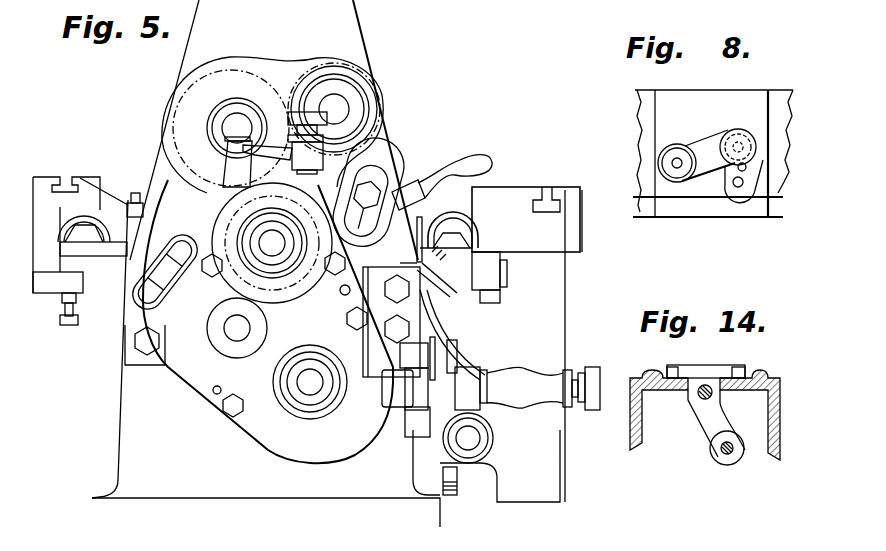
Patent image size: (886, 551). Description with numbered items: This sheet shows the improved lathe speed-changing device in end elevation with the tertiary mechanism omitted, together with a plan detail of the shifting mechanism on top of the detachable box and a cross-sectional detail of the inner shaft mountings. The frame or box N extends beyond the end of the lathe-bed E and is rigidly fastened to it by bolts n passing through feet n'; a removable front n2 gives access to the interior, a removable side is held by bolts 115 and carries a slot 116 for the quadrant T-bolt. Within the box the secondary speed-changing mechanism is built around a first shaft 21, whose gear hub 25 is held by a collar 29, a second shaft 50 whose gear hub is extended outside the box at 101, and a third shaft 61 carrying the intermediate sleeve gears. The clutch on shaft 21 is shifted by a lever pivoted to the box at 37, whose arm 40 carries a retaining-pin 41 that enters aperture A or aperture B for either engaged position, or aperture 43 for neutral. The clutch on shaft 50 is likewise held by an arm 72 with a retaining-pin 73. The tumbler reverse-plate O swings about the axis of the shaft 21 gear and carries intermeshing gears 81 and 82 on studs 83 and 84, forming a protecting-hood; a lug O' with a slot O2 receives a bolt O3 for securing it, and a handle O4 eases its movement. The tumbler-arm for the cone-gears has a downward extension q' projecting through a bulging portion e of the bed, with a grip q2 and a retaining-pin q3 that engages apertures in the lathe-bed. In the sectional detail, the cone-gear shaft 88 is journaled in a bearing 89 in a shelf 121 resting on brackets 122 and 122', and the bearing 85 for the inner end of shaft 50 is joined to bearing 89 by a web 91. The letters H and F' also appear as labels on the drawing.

In FIG. 5, the frame or box N is at (188, 398).
In FIG. 8, the frame or box N is at (670, 195).
In FIG. 5, the lathe-bed or shears E is at (128, 425).
In FIG. 14, the lathe-bed or shears E is at (637, 435).
In FIG. 5, the gear 82 is at (198, 100).
In FIG. 5, the stud 84 is at (237, 127).
In FIG. 5, the gear 81 is at (355, 83).
In FIG. 5, the stud 83 is at (364, 109).
In FIG. 5, the tumbler reverse-plate O is at (405, 92).
In FIG. 5, the arm 40 is at (275, 150).
In FIG. 8, the arm 40 is at (700, 139).
In FIG. 5, the retaining-pin 41 is at (303, 112).
In FIG. 8, the retaining-pin 41 is at (757, 142).
In FIG. 5, the lug O' is at (369, 192).
In FIG. 5, the slot O2 is at (442, 182).
In FIG. 5, the bolt O3 is at (405, 162).
In FIG. 5, the handle O4 is at (462, 163).
In FIG. 5, the hand lever H is at (412, 147).
In FIG. 5, the collar 29 is at (278, 216).
In FIG. 5, the elongated hub 25 is at (290, 228).
In FIG. 5, the shaft 21 is at (284, 243).
In FIG. 5, the third shaft 61 is at (235, 335).
In FIG. 5, the second shaft 50 is at (330, 404).
In FIG. 14, the second shaft 50 is at (718, 458).
In FIG. 5, the extended hub of gear 52 101 is at (309, 400).
In FIG. 5, the bolts 115 is at (346, 318).
In FIG. 5, the slot 116 is at (175, 250).
In FIG. 5, the bolts n is at (267, 356).
In FIG. 5, the feet n' is at (105, 346).
In FIG. 5, the removable front n2 is at (391, 322).
In FIG. 5, the block F' is at (527, 231).
In FIG. 5, the bulging portion of the bed e is at (450, 293).
In FIG. 5, the downward extension q' is at (455, 335).
In FIG. 5, the arm 72 is at (415, 385).
In FIG. 5, the retaining-pin 73 is at (450, 358).
In FIG. 5, the grip q2 is at (525, 380).
In FIG. 5, the retaining-pin q3 is at (597, 366).
In FIG. 8, the aperture B is at (745, 208).
In FIG. 8, the pivot 37 is at (680, 168).
In FIG. 8, the aperture A is at (748, 118).
In FIG. 8, the aperture 43 is at (760, 181).
In FIG. 14, the bracket 122 is at (652, 358).
In FIG. 14, the bracket 122' is at (770, 359).
In FIG. 14, the shelf 121 is at (703, 369).
In FIG. 14, the shaft 88 is at (698, 398).
In FIG. 14, the bearing 89 is at (721, 396).
In FIG. 14, the web 91 is at (705, 423).
In FIG. 14, the bearing 85 is at (737, 453).